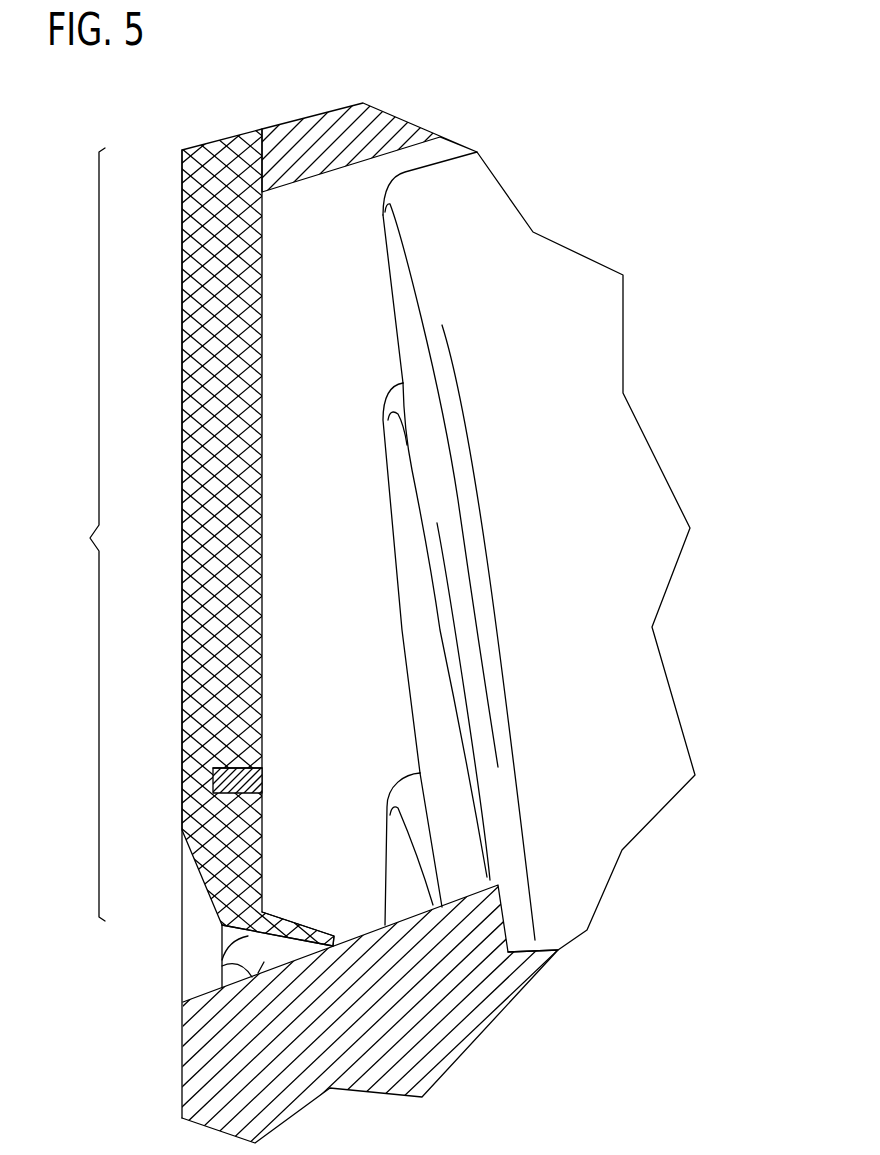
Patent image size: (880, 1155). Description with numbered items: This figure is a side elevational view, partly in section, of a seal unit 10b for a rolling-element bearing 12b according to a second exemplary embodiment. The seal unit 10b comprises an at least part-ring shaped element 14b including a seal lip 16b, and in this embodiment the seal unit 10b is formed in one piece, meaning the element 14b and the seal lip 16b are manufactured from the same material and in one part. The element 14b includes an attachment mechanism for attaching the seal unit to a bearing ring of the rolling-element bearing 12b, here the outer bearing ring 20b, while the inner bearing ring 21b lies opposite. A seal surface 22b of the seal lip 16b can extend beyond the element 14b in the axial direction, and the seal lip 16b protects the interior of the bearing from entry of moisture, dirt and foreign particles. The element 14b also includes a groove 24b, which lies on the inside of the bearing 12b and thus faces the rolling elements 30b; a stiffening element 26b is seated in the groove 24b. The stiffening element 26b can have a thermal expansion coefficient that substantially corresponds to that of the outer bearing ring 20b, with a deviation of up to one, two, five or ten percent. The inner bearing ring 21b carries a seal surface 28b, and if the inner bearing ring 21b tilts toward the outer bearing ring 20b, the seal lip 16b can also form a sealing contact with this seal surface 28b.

The seal unit 10b is at (76, 534).
The rolling-element bearing 12b is at (612, 155).
The part-ring shaped element 14b is at (193, 640).
The seal lip 16b is at (222, 958).
The outer bearing ring 20b is at (307, 125).
The inner bearing ring 21b is at (457, 1020).
The seal surface 22b is at (338, 940).
The groove 24b is at (240, 765).
The stiffening element 26b is at (253, 783).
The seal surface 28b is at (222, 966).
The rolling elements 30b is at (668, 565).